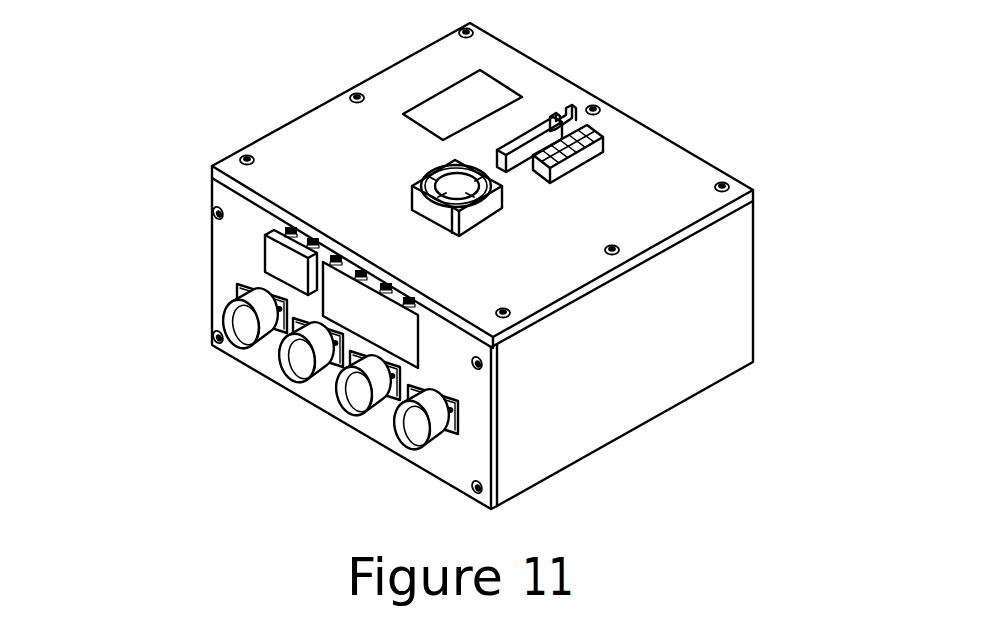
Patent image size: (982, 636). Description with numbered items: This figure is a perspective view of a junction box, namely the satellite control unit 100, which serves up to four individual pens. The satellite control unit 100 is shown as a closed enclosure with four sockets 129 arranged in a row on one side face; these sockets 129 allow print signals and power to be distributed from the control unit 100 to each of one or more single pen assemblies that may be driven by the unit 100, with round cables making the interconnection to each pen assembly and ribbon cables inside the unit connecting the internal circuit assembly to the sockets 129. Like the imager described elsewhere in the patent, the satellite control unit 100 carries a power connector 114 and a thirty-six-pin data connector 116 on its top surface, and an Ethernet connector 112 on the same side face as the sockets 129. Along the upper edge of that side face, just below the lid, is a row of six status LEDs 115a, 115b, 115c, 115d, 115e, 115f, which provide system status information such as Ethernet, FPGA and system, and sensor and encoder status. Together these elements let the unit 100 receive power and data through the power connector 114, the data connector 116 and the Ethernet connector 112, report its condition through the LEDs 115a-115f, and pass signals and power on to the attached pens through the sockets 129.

The satellite control unit 100 is at (685, 185).
The Ethernet connector 112 is at (280, 258).
The power connector 114 is at (597, 153).
The status LED 115a is at (291, 227).
The status LED 115b is at (314, 246).
The status LED 115c is at (338, 262).
The status LED 115d is at (361, 276).
The status LED 115e is at (388, 288).
The status LED 115f is at (413, 303).
The 36-pin data connector 116 is at (530, 123).
The sockets 129 is at (410, 427).